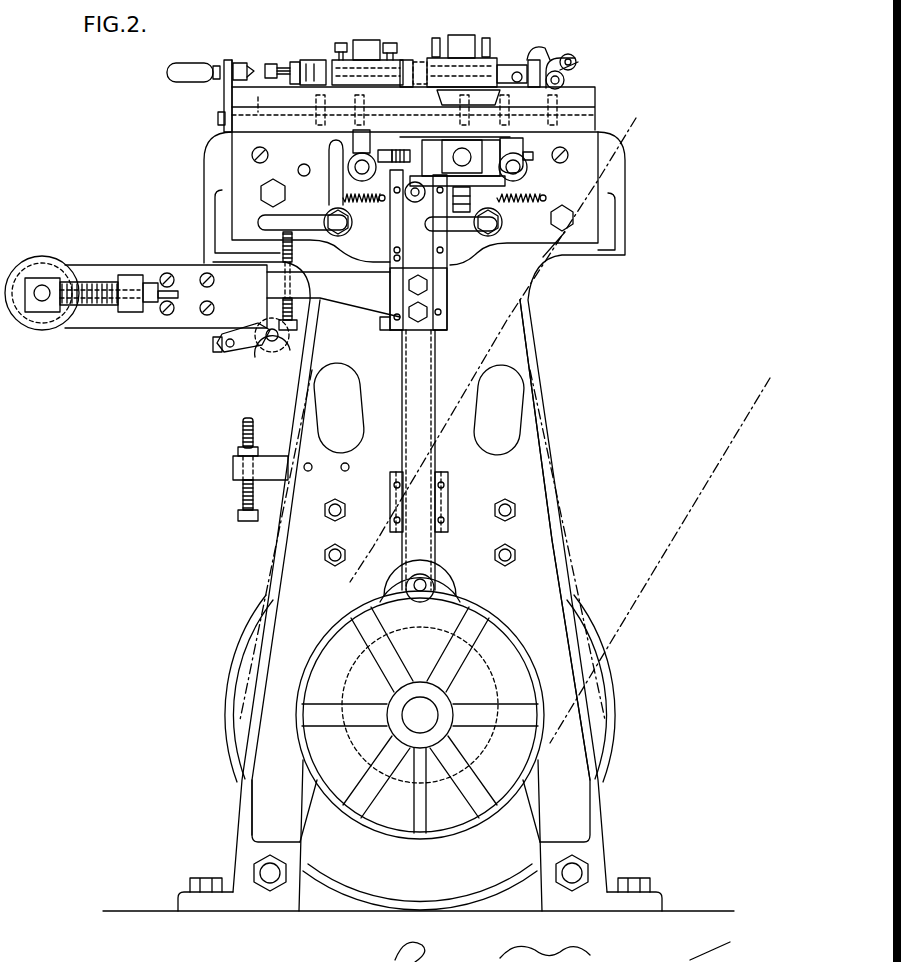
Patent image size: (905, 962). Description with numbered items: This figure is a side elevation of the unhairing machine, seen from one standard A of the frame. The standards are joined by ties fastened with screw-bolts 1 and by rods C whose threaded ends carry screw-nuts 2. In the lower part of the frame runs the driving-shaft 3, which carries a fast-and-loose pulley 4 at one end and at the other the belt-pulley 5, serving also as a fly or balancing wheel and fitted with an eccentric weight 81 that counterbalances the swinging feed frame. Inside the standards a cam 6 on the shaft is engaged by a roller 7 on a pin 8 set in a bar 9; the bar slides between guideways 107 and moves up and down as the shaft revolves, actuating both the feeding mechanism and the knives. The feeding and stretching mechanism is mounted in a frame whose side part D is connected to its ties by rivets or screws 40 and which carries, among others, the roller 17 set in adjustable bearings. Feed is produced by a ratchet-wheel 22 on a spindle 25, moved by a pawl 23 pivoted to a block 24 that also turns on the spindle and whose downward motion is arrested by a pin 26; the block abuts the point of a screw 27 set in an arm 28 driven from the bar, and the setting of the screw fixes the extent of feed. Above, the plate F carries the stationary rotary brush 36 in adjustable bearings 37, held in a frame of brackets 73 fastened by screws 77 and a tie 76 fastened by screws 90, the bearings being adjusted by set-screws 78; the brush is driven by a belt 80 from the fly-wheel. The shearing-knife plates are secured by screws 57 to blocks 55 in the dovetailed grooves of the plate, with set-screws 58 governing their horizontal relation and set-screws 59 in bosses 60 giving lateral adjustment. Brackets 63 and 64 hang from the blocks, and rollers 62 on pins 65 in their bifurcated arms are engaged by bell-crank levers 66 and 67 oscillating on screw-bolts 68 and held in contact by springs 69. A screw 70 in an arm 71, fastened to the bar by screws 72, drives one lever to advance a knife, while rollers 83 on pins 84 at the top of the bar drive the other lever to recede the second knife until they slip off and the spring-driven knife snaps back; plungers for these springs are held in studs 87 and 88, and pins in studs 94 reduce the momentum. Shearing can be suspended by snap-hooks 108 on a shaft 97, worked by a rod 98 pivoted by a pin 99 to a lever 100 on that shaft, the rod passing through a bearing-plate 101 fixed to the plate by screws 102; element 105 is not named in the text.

The screw-bolts 1 is at (337, 521).
The screw-nuts 2 is at (265, 887).
The driving-shaft 3 is at (420, 715).
The fast-and-loose pulley 4 is at (300, 718).
The belt-pulley 5 is at (249, 688).
The cams 6 is at (382, 607).
The rollers 7 is at (433, 585).
The pins 8 is at (413, 584).
The bars 9 is at (305, 103).
The roller 17 is at (27, 322).
The ratchet-wheel 22 is at (270, 322).
The pawl 23 is at (244, 331).
The block 24 is at (222, 354).
The spindle 25 is at (284, 340).
The pin 26 is at (262, 354).
The screw 27 is at (251, 425).
The arm 28 is at (260, 463).
The rotary brush 36 is at (462, 156).
The adjustable bearings 37 is at (410, 149).
The rivets or screws 40 is at (168, 281).
The blocks 55 is at (258, 97).
The screws 57 is at (366, 40).
The set-screws 58 is at (340, 43).
The set-screws 59 is at (272, 63).
The bosses 60 is at (310, 60).
The rollers 62 is at (330, 146).
The bracket 63 is at (362, 155).
The bracket 64 is at (522, 146).
The pins 65 is at (360, 168).
The bell-crank lever 66 is at (266, 218).
The bell-crank lever 67 is at (462, 230).
The screw-bolts 68 is at (342, 233).
The springs 69 is at (375, 204).
The screw 70 is at (292, 247).
The arm 71 is at (333, 294).
The screws 72 is at (408, 310).
The brackets 73 is at (450, 148).
The tie 76 is at (453, 198).
The screws 77 is at (410, 117).
The set-screws 78 is at (532, 157).
The belt 80 is at (569, 525).
The eccentric weight 81 is at (320, 822).
The rollers 83 is at (410, 206).
The pins 84 is at (417, 202).
The stud 87 is at (394, 45).
The stud 88 is at (515, 64).
The screws 90 is at (366, 190).
The studs 94 is at (410, 60).
The shaft 97 is at (566, 80).
The rod 98 is at (554, 58).
The pin 99 is at (577, 60).
The lever 100 is at (576, 56).
The bearing-plate 101 is at (228, 62).
The screws 102 is at (220, 119).
The handle 105 is at (168, 75).
The guideways 107 is at (447, 290).
The snap-hooks 108 is at (530, 50).
The standard A is at (414, 485).
The rod C is at (420, 874).
The side part D is at (146, 296).
The plate F is at (415, 202).